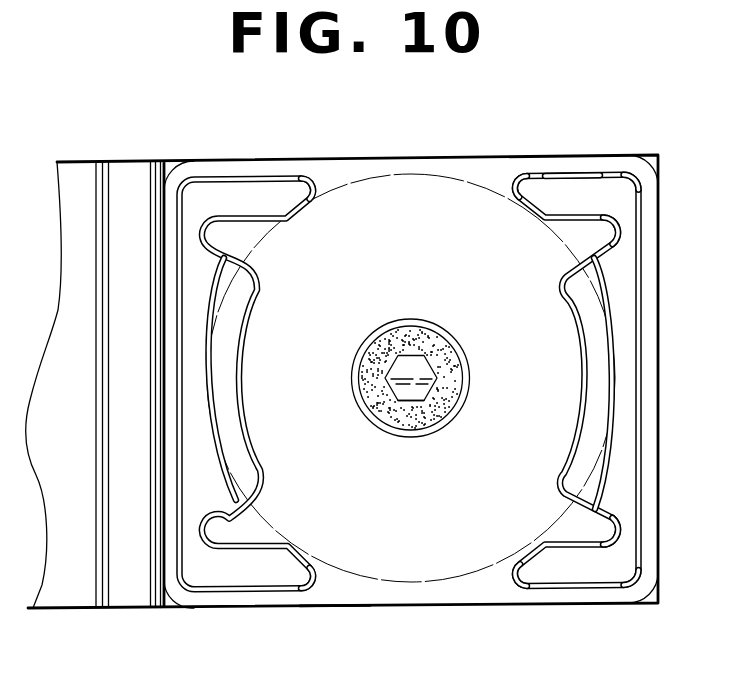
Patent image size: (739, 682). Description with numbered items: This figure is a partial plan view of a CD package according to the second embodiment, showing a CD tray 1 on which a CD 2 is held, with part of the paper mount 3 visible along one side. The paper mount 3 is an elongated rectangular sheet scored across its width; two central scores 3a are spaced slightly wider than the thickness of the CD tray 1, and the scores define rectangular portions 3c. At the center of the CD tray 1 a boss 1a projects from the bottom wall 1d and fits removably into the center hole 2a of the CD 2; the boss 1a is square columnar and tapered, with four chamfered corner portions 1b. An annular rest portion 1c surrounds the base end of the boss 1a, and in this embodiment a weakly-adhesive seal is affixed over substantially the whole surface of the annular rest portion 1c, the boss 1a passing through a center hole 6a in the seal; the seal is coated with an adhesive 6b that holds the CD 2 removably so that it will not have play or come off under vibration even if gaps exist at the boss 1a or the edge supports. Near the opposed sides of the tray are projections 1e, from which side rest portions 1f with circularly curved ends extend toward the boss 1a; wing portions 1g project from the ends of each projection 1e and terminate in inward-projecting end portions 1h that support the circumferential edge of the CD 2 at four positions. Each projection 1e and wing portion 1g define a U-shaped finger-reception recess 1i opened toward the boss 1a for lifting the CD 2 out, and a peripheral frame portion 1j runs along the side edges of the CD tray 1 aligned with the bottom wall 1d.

The CD tray 1 is at (434, 164).
The boss 1a is at (433, 372).
The corner portions 1b is at (412, 352).
The annular rest portion 1c is at (357, 366).
The bottom wall 1d is at (334, 596).
The projections 1e is at (641, 184).
The side rest portions 1f is at (587, 430).
The wing portions 1g is at (570, 185).
The inward-projecting end portions 1h is at (518, 211).
The finger-reception recess 1i is at (597, 243).
The peripheral frame portion 1j is at (631, 596).
The CD 2 is at (388, 597).
The center hole 2a is at (430, 403).
The paper mount 3 is at (124, 183).
The central scores 3a is at (145, 563).
The rectangular portions 3c is at (66, 594).
The center hole 6a is at (371, 346).
The adhesive 6b is at (373, 407).